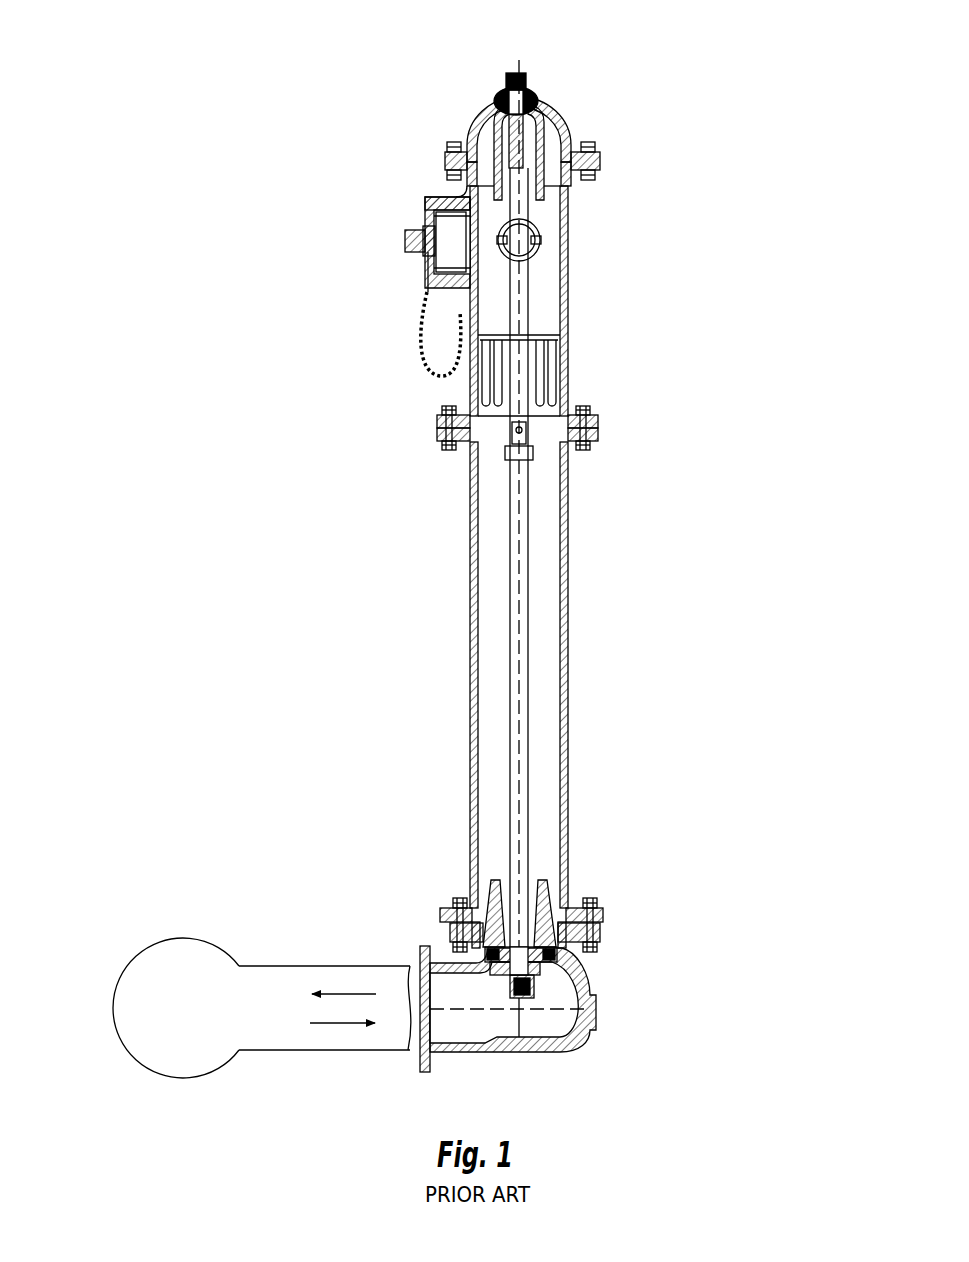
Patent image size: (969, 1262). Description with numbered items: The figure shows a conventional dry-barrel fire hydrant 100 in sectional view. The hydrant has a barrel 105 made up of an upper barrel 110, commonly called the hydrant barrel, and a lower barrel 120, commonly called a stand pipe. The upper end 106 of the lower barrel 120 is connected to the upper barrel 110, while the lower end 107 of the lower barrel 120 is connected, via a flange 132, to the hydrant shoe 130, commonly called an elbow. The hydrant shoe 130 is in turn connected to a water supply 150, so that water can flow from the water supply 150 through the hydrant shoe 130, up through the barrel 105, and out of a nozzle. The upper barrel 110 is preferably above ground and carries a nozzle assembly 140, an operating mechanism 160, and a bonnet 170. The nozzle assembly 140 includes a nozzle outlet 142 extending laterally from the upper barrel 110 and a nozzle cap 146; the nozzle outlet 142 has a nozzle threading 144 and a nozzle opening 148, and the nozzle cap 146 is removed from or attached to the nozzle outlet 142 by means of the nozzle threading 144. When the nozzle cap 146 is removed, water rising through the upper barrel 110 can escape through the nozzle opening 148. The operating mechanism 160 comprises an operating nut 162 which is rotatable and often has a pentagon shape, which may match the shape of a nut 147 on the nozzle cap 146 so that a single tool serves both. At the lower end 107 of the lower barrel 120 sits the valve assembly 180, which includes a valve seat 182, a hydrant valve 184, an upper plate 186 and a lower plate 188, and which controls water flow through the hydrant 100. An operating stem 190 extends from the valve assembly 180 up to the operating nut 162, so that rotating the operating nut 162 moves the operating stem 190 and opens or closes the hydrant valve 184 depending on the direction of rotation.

The fire hydrant 100 is at (742, 118).
The barrel 105 is at (567, 580).
The upper end 106 is at (590, 413).
The lower end 107 is at (460, 920).
The upper barrel 110 is at (562, 262).
The lower barrel 120 is at (568, 785).
The hydrant shoe 130 is at (597, 1018).
The flange 132 is at (602, 935).
The nozzle assembly 140 is at (427, 200).
The nozzle outlet 142 is at (437, 197).
The nozzle threading 144 is at (440, 285).
The nozzle cap 146 is at (408, 248).
The nut 147 is at (407, 240).
The nozzle opening 148 is at (450, 228).
The water supply 150 is at (173, 950).
The operating mechanism 160 is at (490, 98).
The operating nut 162 is at (520, 72).
The bonnet 170 is at (563, 148).
The valve assembly 180 is at (490, 888).
The valve seat 182 is at (600, 908).
The hydrant valve 184 is at (570, 960).
The upper plate 186 is at (548, 888).
The lower plate 188 is at (452, 940).
The operating stem 190 is at (522, 770).